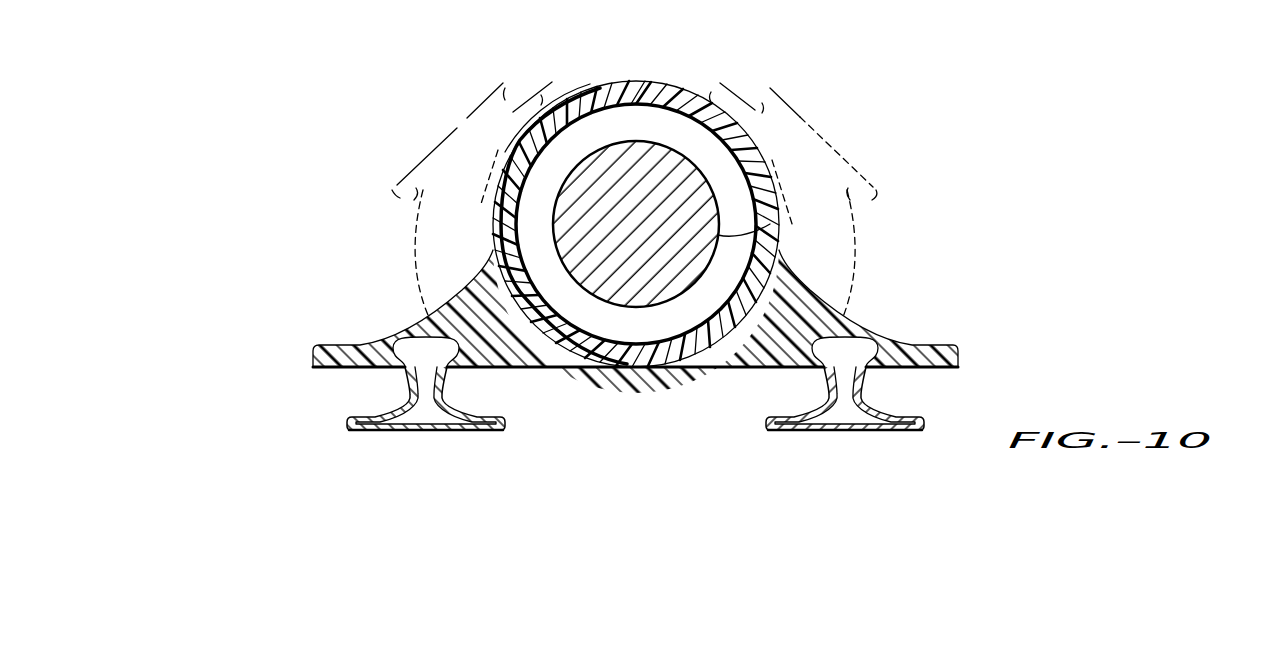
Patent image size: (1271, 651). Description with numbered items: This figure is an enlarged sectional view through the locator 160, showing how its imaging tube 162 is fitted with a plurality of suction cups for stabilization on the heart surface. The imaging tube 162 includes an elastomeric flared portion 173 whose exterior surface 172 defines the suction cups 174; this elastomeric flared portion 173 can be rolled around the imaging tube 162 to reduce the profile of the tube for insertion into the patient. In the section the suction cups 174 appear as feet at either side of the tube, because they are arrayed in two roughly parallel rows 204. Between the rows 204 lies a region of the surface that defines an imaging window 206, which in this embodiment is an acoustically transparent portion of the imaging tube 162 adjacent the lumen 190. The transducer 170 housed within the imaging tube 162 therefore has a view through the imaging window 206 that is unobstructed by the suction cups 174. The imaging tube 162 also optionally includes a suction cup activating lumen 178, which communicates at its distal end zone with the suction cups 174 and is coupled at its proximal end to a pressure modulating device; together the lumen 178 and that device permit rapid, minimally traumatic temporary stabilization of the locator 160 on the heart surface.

The locator 160 is at (512, 150).
The imaging tube 162 is at (505, 152).
The transducer 170 is at (770, 224).
The exterior surface 172 is at (430, 310).
The elastomeric flared portion 173 is at (549, 75).
The suction cups 174 is at (395, 185).
The suction cup activating lumen 178 is at (843, 333).
The lumen 190 is at (550, 222).
The rows 204 is at (495, 449).
The imaging window 206 is at (668, 368).